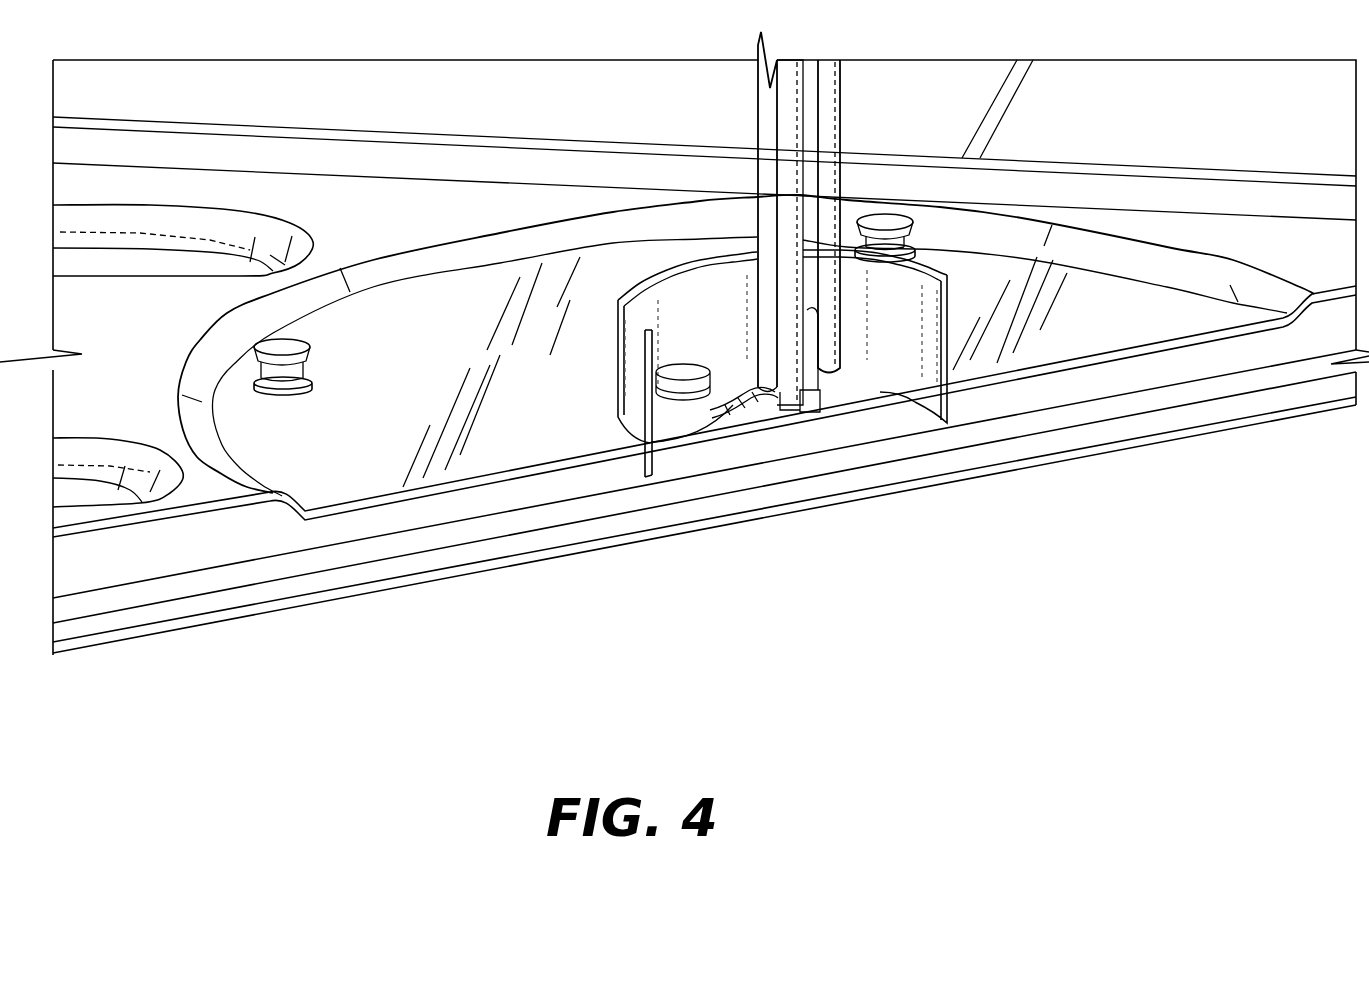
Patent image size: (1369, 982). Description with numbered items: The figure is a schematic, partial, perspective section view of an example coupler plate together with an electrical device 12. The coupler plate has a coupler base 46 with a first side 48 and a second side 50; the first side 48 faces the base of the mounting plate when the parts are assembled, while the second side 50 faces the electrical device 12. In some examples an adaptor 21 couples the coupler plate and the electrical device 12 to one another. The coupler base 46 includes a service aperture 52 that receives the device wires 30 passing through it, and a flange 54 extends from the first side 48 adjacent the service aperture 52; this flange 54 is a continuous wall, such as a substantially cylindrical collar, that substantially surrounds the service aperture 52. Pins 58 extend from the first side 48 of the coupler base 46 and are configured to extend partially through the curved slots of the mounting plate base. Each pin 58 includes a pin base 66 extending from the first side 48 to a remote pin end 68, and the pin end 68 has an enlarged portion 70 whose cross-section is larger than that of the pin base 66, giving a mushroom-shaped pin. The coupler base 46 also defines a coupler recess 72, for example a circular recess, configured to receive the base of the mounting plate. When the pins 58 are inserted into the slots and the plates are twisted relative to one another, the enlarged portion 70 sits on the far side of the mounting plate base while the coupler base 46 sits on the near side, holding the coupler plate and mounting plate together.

The electrical device 12 is at (1216, 116).
The adaptor 21 is at (379, 221).
The device wires 30 is at (758, 113).
The coupler base 46 is at (746, 342).
The first side 48 is at (1130, 336).
The second side 50 is at (1132, 362).
The service aperture 52 is at (797, 427).
The flange 54 is at (626, 379).
The pins 58 is at (573, 287).
The pin base 66 is at (318, 372).
The pin end 68 is at (310, 345).
The enlarged portion 70 is at (258, 344).
The coupler recess 72 is at (495, 252).